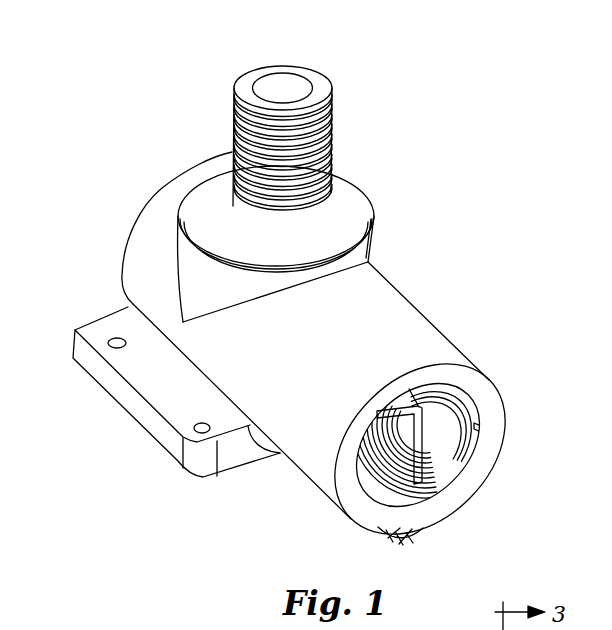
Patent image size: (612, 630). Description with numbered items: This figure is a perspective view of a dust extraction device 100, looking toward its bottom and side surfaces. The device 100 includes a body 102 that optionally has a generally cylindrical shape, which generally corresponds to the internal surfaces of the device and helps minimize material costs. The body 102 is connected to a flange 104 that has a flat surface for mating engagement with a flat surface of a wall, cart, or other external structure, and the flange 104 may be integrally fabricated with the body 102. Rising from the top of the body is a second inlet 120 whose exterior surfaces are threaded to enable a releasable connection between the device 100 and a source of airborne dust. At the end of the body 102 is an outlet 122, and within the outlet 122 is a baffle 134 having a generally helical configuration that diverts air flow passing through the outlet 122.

The dust extraction device 100 is at (306, 304).
The body 102 is at (330, 366).
The flange 104 is at (158, 428).
The second inlet 120 is at (286, 79).
The outlet 122 is at (450, 478).
The baffle 134 is at (407, 428).